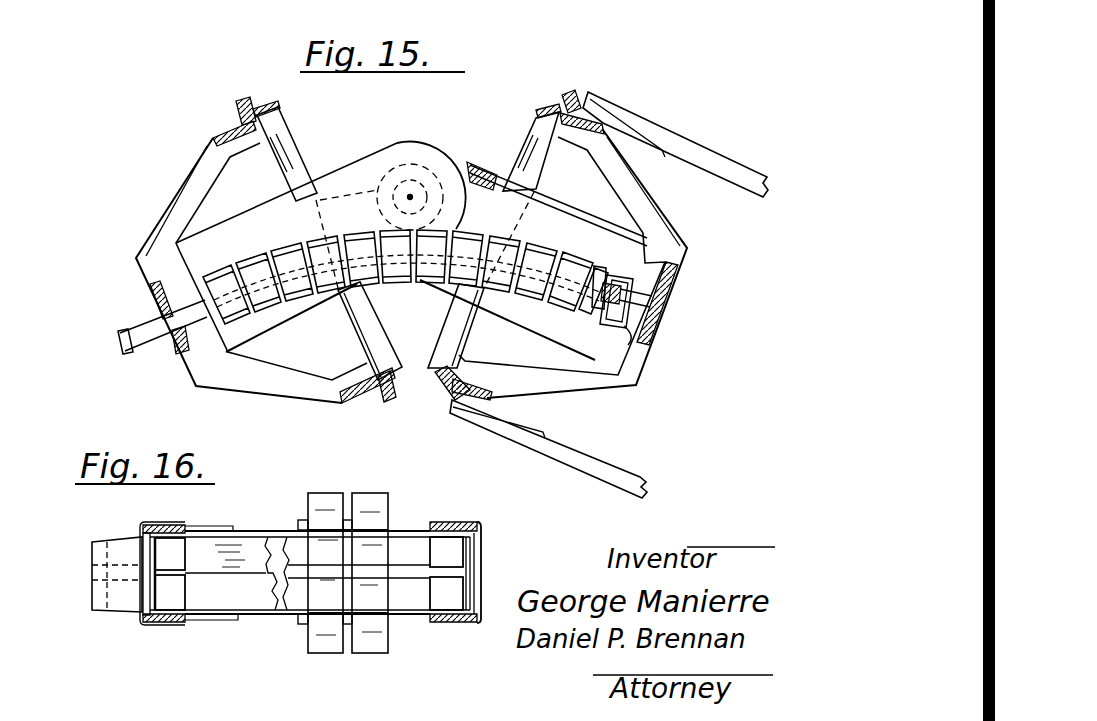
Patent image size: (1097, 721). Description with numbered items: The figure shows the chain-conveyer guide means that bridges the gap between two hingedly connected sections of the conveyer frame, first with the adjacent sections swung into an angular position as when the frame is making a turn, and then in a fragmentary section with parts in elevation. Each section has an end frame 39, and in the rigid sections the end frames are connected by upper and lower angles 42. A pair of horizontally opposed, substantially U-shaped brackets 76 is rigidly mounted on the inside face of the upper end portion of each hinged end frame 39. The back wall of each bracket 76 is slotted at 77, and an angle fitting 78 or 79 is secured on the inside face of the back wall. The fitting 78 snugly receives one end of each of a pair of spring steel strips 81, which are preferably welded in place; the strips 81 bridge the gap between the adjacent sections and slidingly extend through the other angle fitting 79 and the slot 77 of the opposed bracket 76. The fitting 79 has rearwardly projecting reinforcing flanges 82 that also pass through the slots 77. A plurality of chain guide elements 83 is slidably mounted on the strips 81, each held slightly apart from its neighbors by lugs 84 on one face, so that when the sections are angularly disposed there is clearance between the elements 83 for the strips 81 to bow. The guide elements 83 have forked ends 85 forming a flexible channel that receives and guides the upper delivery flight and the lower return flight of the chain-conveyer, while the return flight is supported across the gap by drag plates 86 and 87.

In FIG. 15, the end frame 39 is at (263, 107).
In FIG. 15, the upper and lower angle 42 is at (730, 165).
In FIG. 15, the U-shaped bracket 76 is at (181, 188).
In FIG. 16, the U-shaped bracket 76 is at (177, 627).
In FIG. 15, the slot 77 is at (168, 333).
In FIG. 16, the slot 77 is at (143, 622).
In FIG. 15, the angle fitting 78 is at (633, 335).
In FIG. 16, the angle fitting 78 is at (463, 568).
In FIG. 15, the angle fitting 79 is at (197, 320).
In FIG. 16, the angle fitting 79 is at (150, 556).
In FIG. 15, the spring steel strip 81 is at (122, 330).
In FIG. 16, the spring steel strip 81 is at (290, 595).
In FIG. 15, the reinforcing flange 82 is at (126, 343).
In FIG. 16, the reinforcing flange 82 is at (97, 613).
In FIG. 15, the chain guide element 83 is at (308, 247).
In FIG. 16, the chain guide element 83 is at (373, 547).
In FIG. 15, the lug 84 is at (450, 260).
In FIG. 16, the lug 84 is at (345, 520).
In FIG. 15, the forked end 85 is at (352, 290).
In FIG. 16, the forked end 85 is at (358, 493).
In FIG. 15, the drag plate 86 is at (395, 143).
In FIG. 15, the drag plate 87 is at (572, 210).